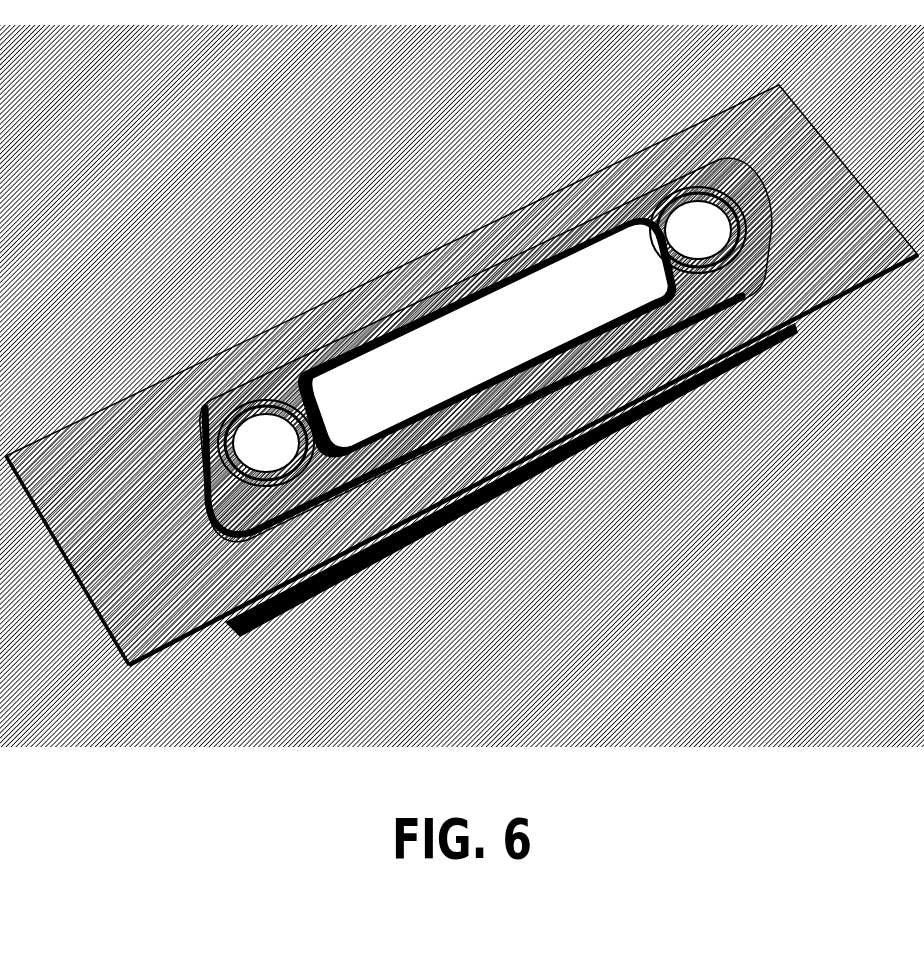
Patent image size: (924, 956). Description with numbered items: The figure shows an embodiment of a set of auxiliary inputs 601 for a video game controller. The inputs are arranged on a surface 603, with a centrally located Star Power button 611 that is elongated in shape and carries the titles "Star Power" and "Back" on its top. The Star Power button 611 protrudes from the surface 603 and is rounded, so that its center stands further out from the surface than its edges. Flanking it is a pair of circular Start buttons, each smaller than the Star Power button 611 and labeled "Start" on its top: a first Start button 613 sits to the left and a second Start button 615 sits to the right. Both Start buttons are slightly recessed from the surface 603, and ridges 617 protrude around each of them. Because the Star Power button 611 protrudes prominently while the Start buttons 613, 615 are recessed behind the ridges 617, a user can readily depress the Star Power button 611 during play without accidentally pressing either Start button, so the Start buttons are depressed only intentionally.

The set of auxiliary inputs 601 is at (782, 620).
The surface 603 is at (527, 387).
The Star Power button 611 is at (465, 288).
The first Start button 613 is at (242, 466).
The second Start button 615 is at (700, 202).
The ridges 617 is at (228, 417).